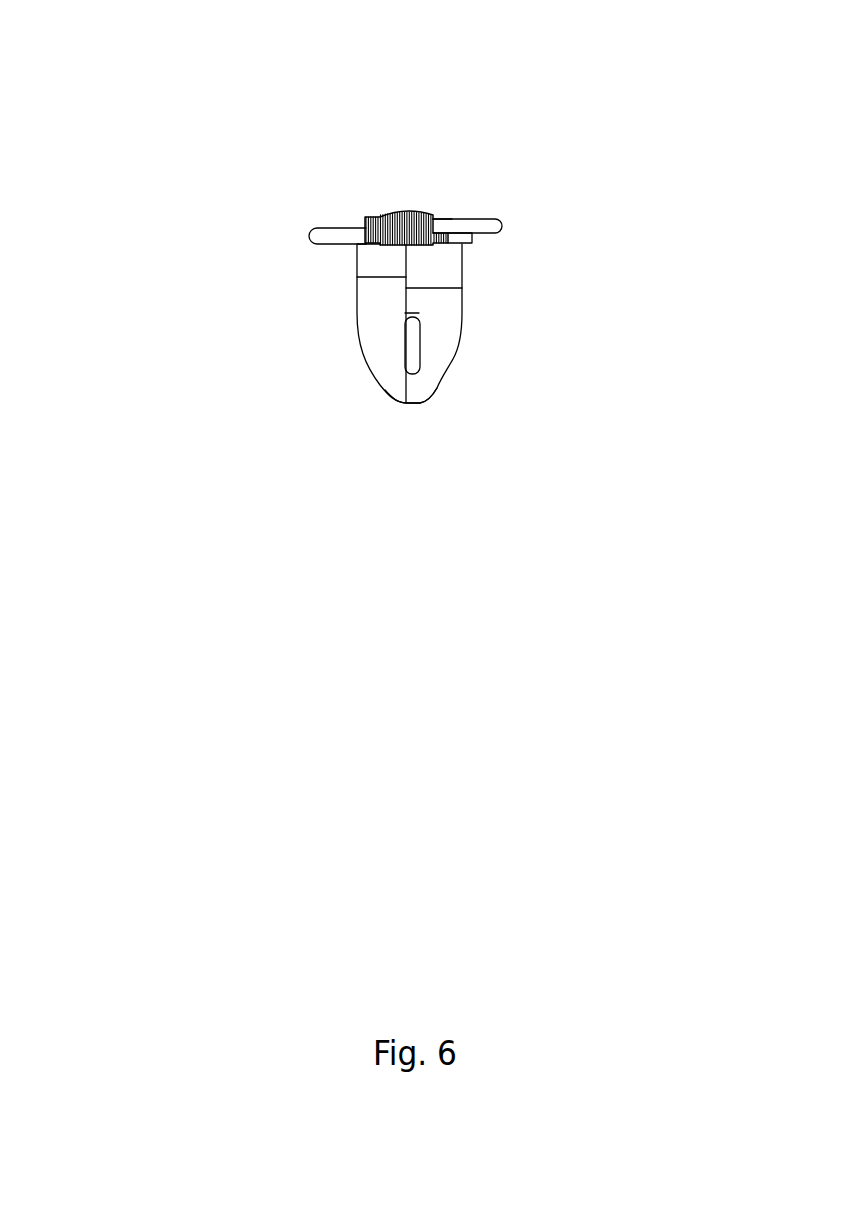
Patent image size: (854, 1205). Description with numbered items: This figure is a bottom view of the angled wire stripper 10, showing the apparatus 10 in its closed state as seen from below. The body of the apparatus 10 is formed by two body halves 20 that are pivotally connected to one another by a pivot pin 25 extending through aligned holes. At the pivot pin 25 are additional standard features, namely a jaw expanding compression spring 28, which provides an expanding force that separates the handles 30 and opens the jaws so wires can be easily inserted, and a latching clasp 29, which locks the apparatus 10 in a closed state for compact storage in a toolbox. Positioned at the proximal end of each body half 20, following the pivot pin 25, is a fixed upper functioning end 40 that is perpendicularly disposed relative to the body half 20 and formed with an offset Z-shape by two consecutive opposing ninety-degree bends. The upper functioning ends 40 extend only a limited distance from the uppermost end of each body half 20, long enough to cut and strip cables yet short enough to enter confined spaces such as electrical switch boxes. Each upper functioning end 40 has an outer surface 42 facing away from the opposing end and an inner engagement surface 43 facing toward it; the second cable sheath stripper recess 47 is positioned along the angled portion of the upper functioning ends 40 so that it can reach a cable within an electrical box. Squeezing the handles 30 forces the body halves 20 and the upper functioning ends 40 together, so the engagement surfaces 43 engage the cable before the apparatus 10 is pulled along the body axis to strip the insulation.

The angled wire stripper 10 is at (700, 112).
The body half 20 is at (338, 234).
The pivot pin 25 is at (409, 213).
The jaw expanding compression spring 28 is at (382, 245).
The latching clasp 29 is at (472, 242).
The handles 30 is at (365, 235).
The upper functioning end 40 is at (392, 380).
The outer surface 42 is at (358, 314).
The inner engagement surface 43 is at (418, 314).
The second cable sheath stripper recess 47 is at (415, 362).